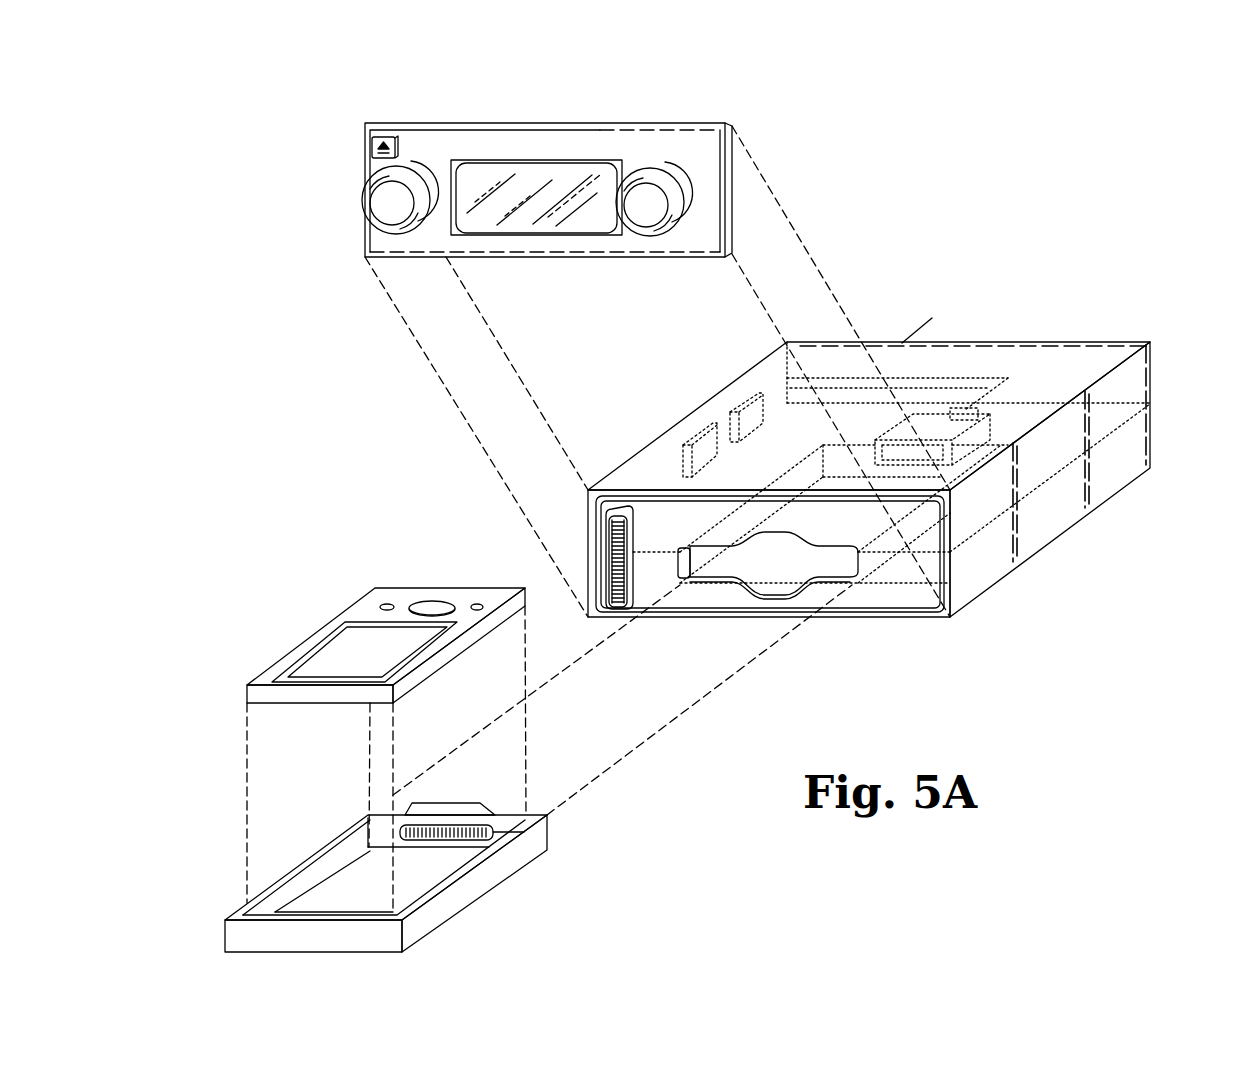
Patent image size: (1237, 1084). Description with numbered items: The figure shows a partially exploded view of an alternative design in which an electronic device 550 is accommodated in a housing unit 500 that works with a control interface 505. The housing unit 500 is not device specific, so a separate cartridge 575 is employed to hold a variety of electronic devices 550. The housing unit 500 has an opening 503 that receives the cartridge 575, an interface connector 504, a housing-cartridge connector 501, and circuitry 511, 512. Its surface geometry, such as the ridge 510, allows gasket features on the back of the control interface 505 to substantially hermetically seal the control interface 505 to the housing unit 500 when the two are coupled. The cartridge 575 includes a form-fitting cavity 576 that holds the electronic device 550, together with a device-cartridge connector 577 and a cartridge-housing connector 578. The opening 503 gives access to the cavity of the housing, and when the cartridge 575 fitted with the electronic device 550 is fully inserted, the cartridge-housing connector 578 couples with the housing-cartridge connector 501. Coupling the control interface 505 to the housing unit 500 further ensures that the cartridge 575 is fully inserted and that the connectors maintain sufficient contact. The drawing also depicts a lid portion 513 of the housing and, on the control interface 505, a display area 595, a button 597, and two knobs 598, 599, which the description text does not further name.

The housing unit 500 is at (1032, 244).
The housing-cartridge connector 501 is at (978, 424).
The opening 503 is at (717, 545).
The interface connector 504 is at (611, 563).
The control interface 505 is at (527, 123).
The ridge 510 is at (605, 512).
The circuitry 511 is at (700, 448).
The circuitry 512 is at (743, 413).
The lid 513 is at (924, 323).
The electronic device 550 is at (428, 588).
The cartridge 575 is at (473, 898).
The form-fitting cavity 576 is at (355, 890).
The device-cartridge connector 577 is at (524, 833).
The cartridge-housing connector 578 is at (475, 810).
The display 595 is at (628, 242).
The eject button 597 is at (372, 145).
The knob 598 is at (362, 200).
The knob 599 is at (673, 224).